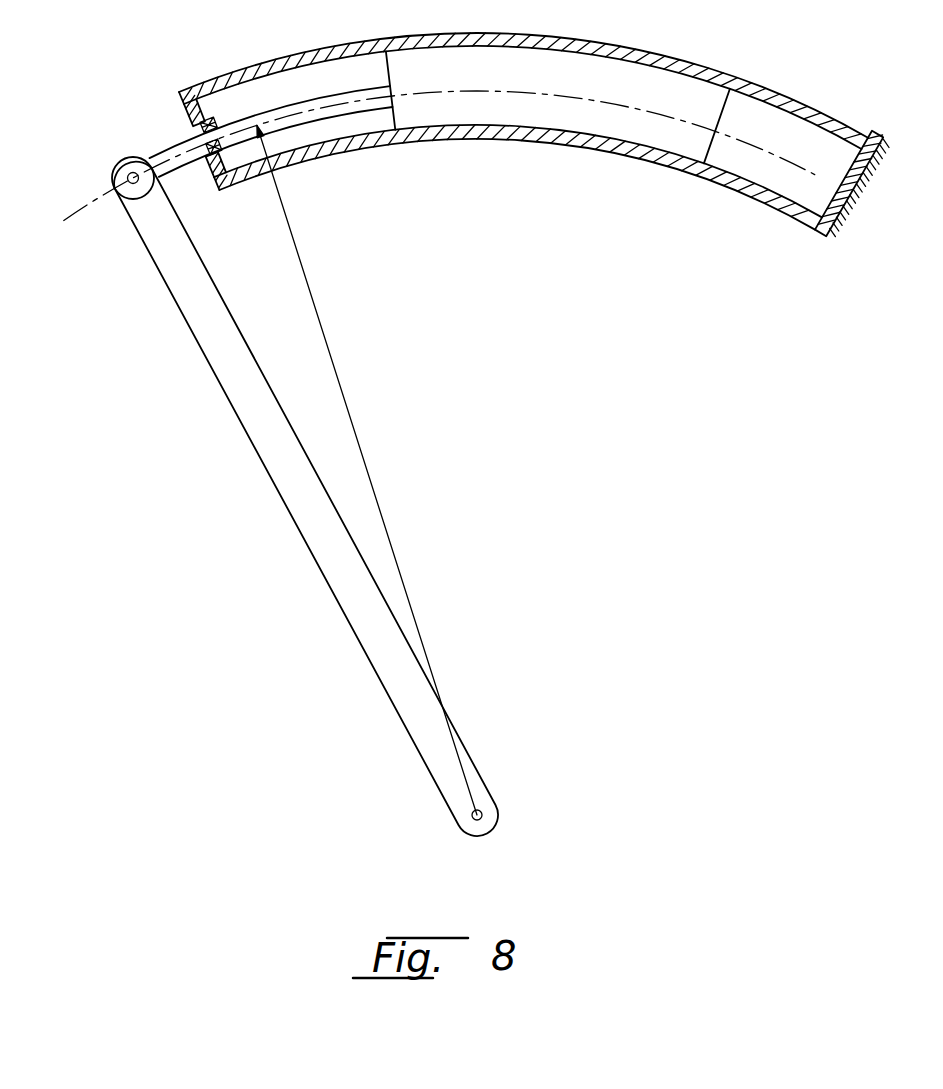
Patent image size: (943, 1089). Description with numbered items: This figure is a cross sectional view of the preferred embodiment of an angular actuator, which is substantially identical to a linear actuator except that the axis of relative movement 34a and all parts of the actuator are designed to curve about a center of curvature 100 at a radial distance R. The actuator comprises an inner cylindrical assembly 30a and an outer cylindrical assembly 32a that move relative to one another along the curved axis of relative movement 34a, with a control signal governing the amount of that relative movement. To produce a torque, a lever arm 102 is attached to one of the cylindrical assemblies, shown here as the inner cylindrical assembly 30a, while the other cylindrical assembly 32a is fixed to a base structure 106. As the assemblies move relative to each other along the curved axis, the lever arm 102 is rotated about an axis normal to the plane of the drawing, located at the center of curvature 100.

The inner cylindrical assembly 30a is at (482, 62).
The outer cylindrical assembly 32a is at (662, 61).
The axis of relative movement 34a is at (92, 203).
The center of curvature 100 is at (481, 812).
The lever arm 102 is at (267, 384).
The base structure 106 is at (822, 238).
The radial distance R is at (365, 464).